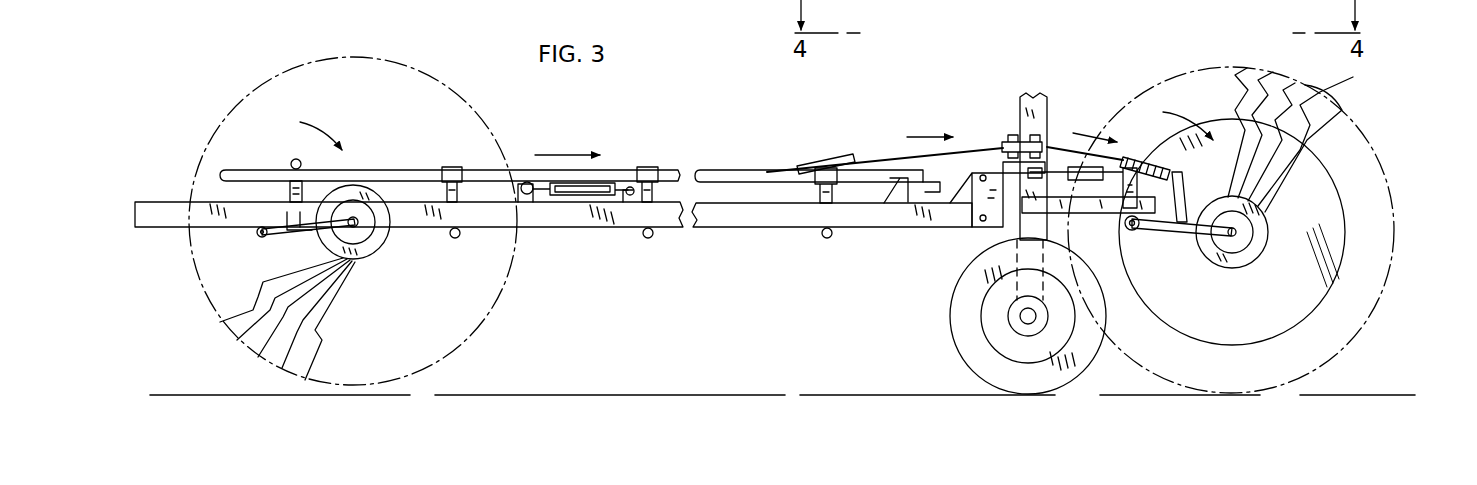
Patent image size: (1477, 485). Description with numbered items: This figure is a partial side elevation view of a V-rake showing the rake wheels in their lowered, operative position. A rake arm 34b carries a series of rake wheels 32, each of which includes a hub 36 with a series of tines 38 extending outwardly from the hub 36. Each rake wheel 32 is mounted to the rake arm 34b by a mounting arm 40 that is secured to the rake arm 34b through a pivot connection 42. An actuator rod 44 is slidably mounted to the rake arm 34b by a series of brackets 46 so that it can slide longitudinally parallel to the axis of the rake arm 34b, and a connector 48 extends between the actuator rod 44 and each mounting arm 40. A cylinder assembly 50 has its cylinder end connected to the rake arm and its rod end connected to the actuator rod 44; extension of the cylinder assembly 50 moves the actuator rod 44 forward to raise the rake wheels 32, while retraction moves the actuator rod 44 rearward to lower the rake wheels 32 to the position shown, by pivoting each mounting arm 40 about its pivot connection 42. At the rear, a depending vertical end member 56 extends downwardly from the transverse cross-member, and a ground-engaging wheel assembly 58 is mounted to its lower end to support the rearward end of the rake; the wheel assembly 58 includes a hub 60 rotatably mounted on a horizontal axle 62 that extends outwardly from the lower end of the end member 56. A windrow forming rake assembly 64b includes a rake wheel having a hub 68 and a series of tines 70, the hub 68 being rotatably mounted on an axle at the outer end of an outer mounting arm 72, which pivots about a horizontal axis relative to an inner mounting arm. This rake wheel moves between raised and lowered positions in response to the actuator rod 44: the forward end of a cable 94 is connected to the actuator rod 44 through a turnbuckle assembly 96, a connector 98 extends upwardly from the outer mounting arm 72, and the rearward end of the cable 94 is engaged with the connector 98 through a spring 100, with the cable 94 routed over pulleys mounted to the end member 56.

The rake wheel 32 is at (383, 58).
The rake arm 34b is at (728, 230).
The hub 36 is at (370, 258).
The tines 38 is at (310, 328).
The mounting arm 40 is at (296, 232).
The pivot connection 42 is at (260, 237).
The actuator rod 44 is at (717, 170).
The brackets 46 is at (817, 195).
The connector 48 is at (293, 187).
The cylinder assembly 50 is at (581, 199).
The end member 56 is at (1018, 97).
The ground-engaging wheel assembly 58 is at (950, 363).
The hub 60 is at (997, 322).
The horizontal axle 62 is at (1028, 320).
The windrow forming rake assembly 64b is at (1377, 123).
The hub 68 is at (1268, 214).
The tines 70 is at (1305, 85).
The outer mounting arm 72 is at (1181, 234).
The cable 94 is at (888, 155).
The turnbuckle assembly 96 is at (830, 162).
The connector 98 is at (1187, 190).
The spring 100 is at (1130, 160).